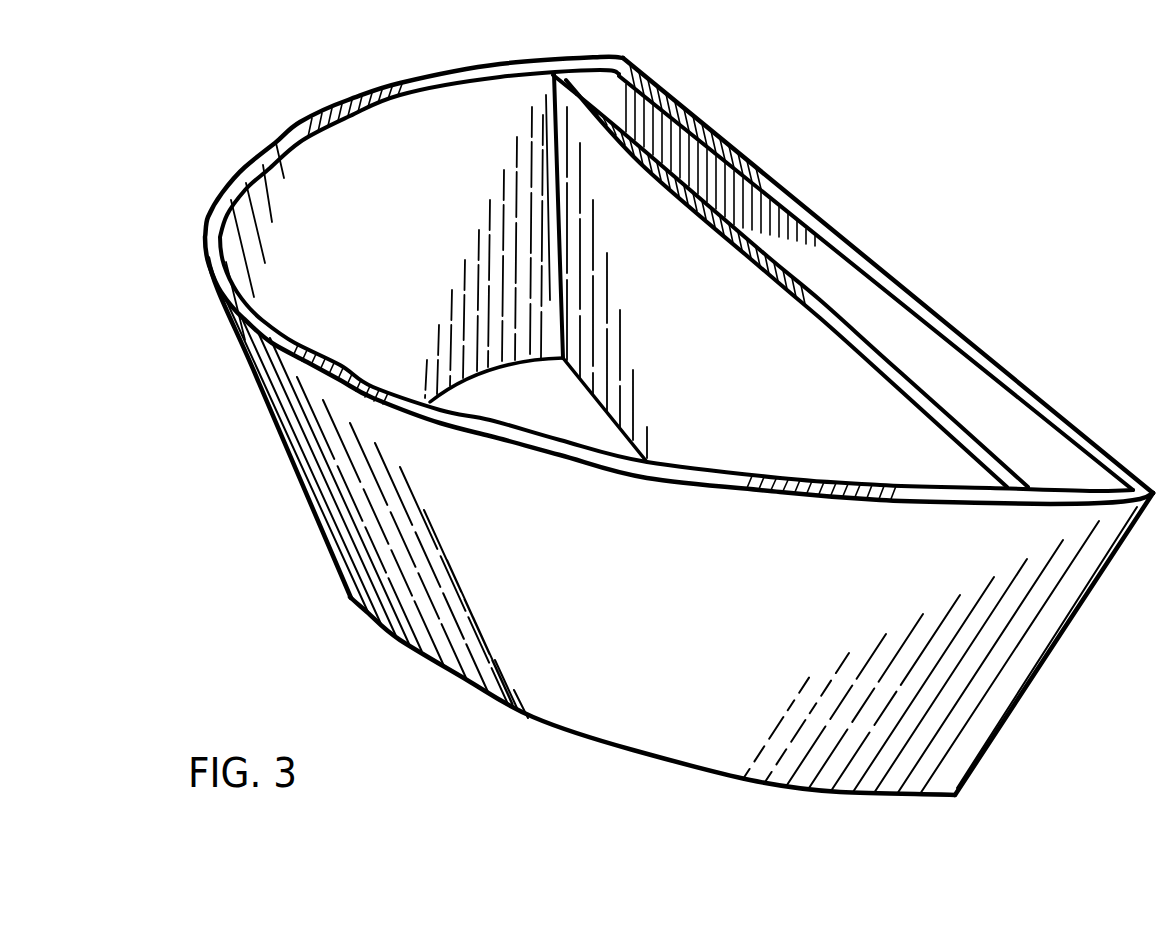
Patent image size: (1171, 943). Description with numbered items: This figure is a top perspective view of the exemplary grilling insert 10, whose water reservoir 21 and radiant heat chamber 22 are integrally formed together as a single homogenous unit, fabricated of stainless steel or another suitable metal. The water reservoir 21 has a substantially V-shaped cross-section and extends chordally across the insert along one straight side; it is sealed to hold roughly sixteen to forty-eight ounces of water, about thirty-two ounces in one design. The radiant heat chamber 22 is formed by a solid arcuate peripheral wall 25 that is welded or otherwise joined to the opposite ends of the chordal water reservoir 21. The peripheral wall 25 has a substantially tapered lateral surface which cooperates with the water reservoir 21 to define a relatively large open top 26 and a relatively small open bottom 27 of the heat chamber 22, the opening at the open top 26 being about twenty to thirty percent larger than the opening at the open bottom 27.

The grilling insert 10 is at (805, 155).
The water reservoir 21 is at (680, 128).
The radiant heat chamber 22 is at (384, 139).
The peripheral wall 25 is at (375, 221).
The open top 26 is at (470, 72).
The open bottom 27 is at (496, 374).